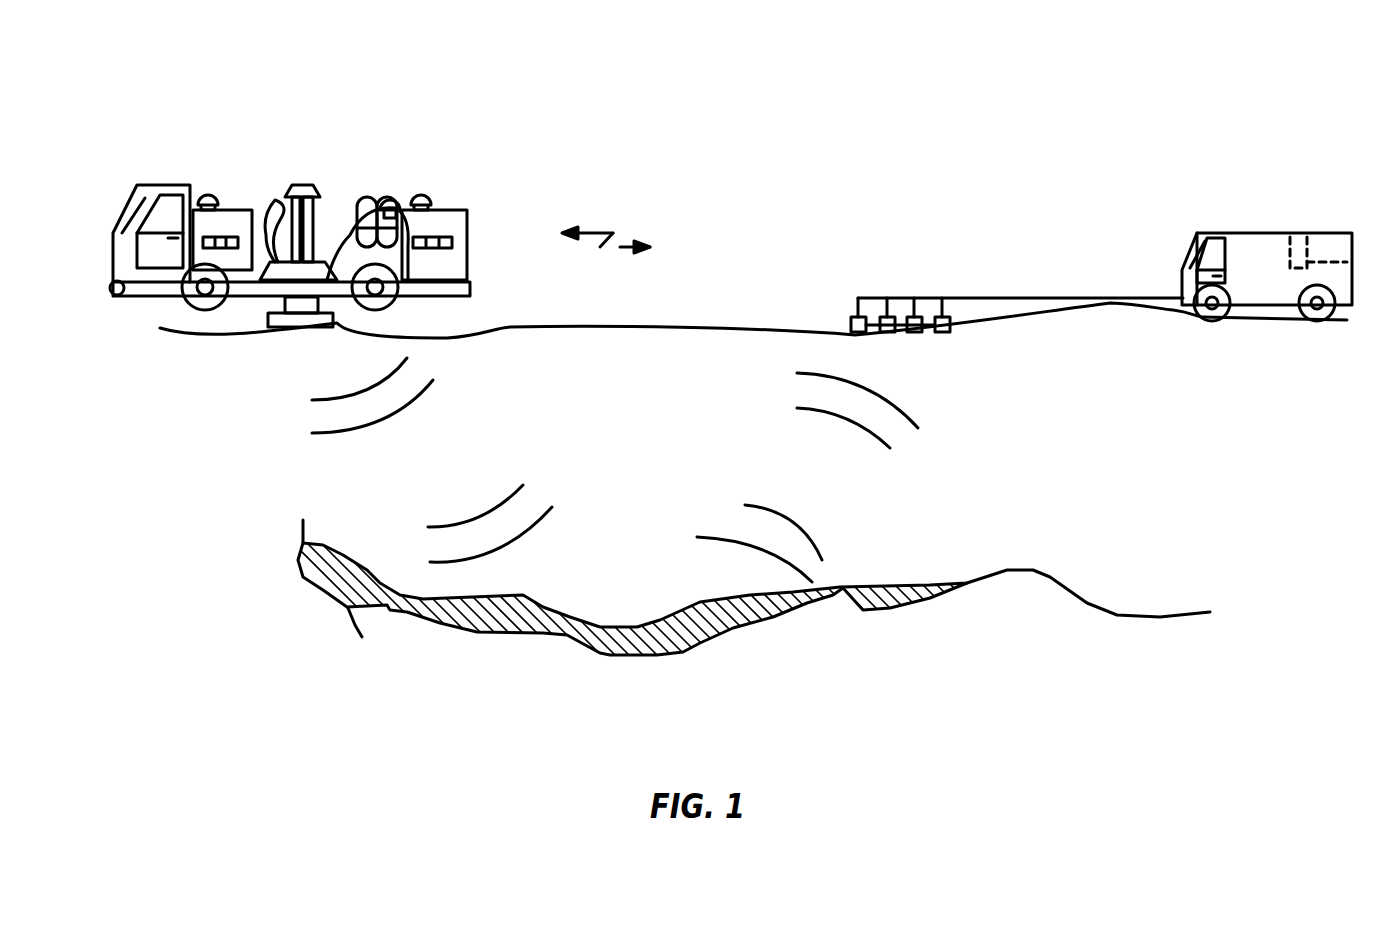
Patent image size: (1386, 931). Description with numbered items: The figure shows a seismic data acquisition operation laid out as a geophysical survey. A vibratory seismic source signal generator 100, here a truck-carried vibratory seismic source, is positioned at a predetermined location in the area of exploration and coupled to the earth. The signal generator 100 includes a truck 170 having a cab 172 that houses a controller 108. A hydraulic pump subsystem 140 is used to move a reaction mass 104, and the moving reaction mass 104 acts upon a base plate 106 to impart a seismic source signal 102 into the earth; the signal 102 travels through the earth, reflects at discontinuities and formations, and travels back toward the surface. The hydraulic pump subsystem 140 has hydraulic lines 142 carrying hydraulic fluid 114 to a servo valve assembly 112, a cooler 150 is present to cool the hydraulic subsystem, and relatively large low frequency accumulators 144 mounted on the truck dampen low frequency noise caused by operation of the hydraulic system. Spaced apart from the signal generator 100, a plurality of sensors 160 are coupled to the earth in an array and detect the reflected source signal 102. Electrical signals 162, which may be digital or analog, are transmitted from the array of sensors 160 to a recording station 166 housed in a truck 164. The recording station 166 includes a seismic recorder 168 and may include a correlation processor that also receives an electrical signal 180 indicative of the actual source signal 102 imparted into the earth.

The vibratory seismic source signal generator 100 is at (128, 165).
The seismic source signal 102 is at (238, 413).
The reaction mass 104 is at (341, 203).
The base plate 106 is at (337, 318).
The controller 108 is at (295, 194).
The servo valve assembly 112 is at (263, 203).
The hydraulic fluid 114 is at (340, 203).
The hydraulic pump subsystem 140 is at (232, 205).
The hydraulic lines 142 is at (411, 179).
The low frequency accumulators 144 is at (388, 203).
The cooler 150 is at (470, 212).
The sensors 160 is at (937, 346).
The electrical signals 162 is at (1017, 311).
The truck 164 is at (1236, 241).
The recording station 166 is at (1297, 245).
The seismic recorder 168 is at (1330, 245).
The truck 170 is at (113, 210).
The cab 172 is at (155, 185).
The electrical signal 180 is at (613, 233).